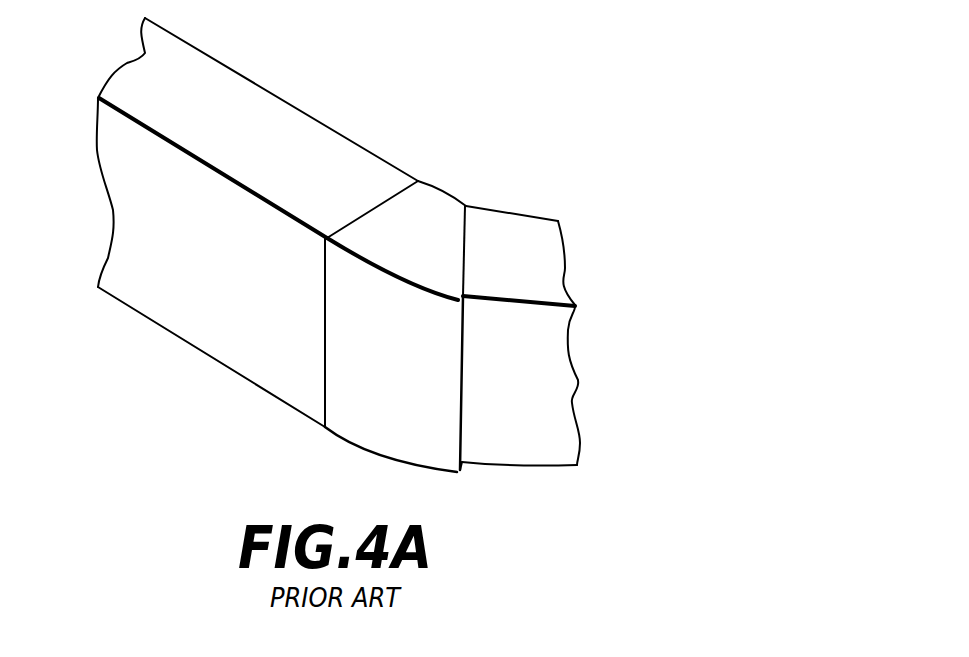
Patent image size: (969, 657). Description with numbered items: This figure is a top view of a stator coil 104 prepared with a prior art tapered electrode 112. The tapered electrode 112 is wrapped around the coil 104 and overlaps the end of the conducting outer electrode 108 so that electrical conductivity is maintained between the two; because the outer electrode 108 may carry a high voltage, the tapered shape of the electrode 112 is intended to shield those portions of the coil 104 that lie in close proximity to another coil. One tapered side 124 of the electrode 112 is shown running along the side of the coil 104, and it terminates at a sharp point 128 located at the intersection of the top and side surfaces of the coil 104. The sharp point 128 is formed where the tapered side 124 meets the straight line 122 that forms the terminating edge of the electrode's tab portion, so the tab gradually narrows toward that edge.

The stator coil 104 is at (712, 294).
The conducting outer electrode 108 is at (263, 122).
The tapered electrode 112 is at (435, 210).
The straight line 122 is at (455, 383).
The tapered side 124 is at (466, 247).
The sharp point 128 is at (466, 293).